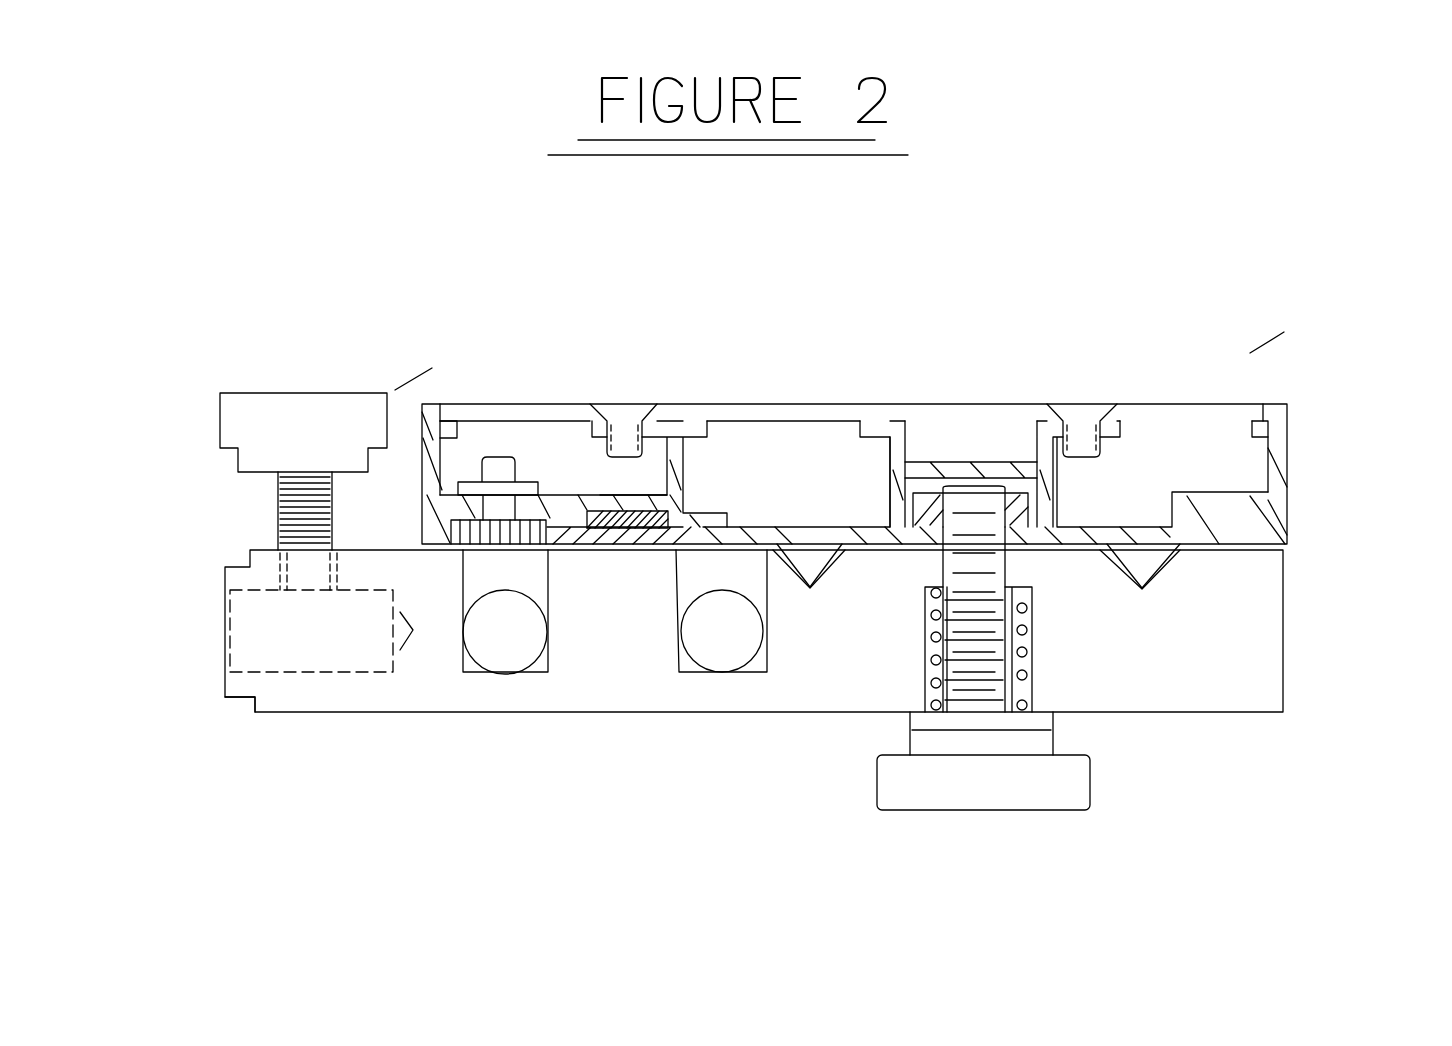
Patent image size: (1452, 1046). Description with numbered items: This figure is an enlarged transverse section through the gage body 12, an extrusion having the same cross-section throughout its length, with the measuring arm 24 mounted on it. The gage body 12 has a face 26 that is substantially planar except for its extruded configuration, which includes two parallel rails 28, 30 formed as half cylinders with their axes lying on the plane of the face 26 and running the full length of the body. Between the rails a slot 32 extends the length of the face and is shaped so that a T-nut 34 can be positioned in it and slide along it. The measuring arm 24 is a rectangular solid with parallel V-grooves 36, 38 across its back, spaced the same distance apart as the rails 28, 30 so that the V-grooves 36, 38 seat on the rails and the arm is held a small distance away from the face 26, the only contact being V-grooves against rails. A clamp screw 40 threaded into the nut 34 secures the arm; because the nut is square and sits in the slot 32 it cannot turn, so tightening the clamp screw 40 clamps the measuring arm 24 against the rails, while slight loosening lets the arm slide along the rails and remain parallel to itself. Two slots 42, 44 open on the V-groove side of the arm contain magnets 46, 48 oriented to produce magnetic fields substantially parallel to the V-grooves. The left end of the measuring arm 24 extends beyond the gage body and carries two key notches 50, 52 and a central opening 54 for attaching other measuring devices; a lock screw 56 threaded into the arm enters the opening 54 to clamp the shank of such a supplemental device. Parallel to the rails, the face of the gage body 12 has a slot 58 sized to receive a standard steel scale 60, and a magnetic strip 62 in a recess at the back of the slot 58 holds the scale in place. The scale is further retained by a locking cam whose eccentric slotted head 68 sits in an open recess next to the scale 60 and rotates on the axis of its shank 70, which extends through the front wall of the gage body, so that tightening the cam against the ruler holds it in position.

The gage body 12 is at (1290, 471).
The measuring arm 24 is at (1290, 612).
The face 26 is at (1257, 545).
The rail 28 is at (833, 567).
The rail 30 is at (1163, 566).
The slot 32 is at (1040, 553).
The T-nut 34 is at (1015, 553).
The conical detent 36 is at (792, 560).
The V-groove 38 is at (1157, 545).
The clamp screw 40 is at (1047, 810).
The slot 42 is at (477, 660).
The slot 44 is at (688, 663).
The magnet 46 is at (520, 595).
The magnet 48 is at (735, 582).
The key notch 50 is at (232, 563).
The key notch 52 is at (233, 700).
The central opening 54 is at (223, 627).
The lock screw 56 is at (243, 393).
The slot 58 is at (712, 541).
The steel scale 60 is at (609, 550).
The magnetic strip 62 is at (645, 497).
The eccentric slotted head 68 is at (474, 543).
The shank 70 is at (492, 457).